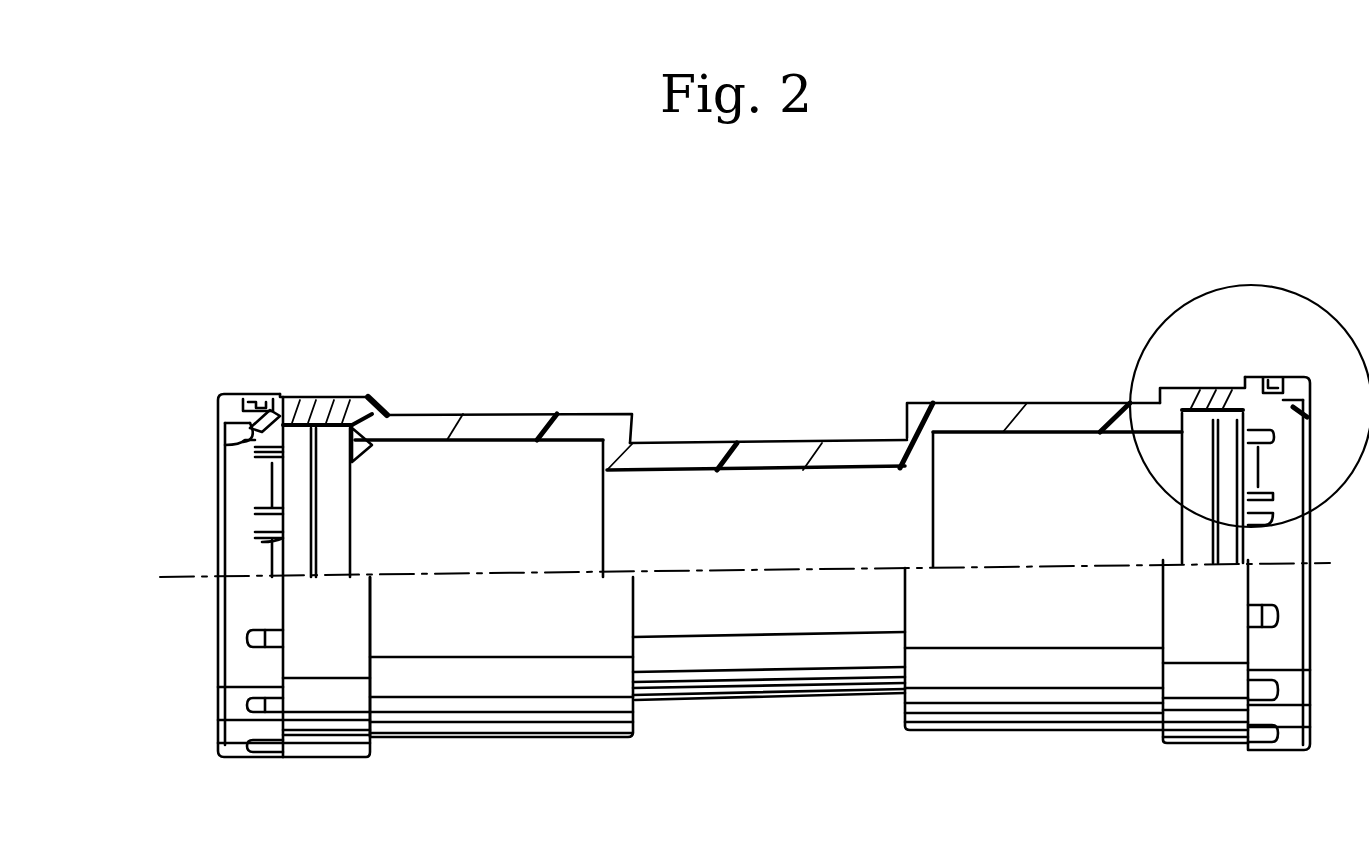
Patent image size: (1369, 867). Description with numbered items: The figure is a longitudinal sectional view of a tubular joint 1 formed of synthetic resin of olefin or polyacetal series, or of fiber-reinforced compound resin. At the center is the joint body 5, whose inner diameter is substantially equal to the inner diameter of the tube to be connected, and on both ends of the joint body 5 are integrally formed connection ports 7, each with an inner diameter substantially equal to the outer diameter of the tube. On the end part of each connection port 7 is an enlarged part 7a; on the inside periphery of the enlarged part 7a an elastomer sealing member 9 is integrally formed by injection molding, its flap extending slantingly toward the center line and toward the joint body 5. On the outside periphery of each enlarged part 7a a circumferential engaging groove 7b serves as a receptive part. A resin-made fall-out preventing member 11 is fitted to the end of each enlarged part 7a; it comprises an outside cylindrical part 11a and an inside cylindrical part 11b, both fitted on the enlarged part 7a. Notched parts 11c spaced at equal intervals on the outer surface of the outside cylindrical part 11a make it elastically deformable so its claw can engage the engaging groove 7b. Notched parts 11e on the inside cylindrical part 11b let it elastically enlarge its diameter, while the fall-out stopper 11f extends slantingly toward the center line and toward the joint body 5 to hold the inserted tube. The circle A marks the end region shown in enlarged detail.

The tubular joint 1 is at (867, 348).
The joint body 5 is at (768, 457).
The connection port 7 is at (522, 427).
The enlarged part 7a is at (332, 410).
The engaging groove 7b is at (253, 395).
The sealing member 9 is at (360, 466).
The resin-made fall-out preventing member 11 is at (232, 393).
The outside cylindrical part 11a is at (257, 407).
The inside cylindrical part 11b is at (245, 443).
The notched part 11c is at (258, 713).
The notched part 11e is at (267, 537).
The fall-out stopper 11f is at (273, 522).
The detail region A is at (1180, 306).